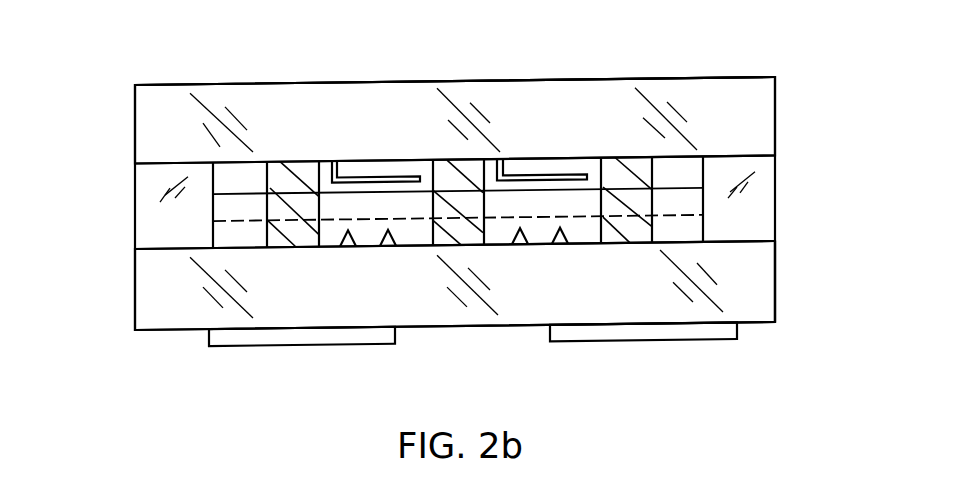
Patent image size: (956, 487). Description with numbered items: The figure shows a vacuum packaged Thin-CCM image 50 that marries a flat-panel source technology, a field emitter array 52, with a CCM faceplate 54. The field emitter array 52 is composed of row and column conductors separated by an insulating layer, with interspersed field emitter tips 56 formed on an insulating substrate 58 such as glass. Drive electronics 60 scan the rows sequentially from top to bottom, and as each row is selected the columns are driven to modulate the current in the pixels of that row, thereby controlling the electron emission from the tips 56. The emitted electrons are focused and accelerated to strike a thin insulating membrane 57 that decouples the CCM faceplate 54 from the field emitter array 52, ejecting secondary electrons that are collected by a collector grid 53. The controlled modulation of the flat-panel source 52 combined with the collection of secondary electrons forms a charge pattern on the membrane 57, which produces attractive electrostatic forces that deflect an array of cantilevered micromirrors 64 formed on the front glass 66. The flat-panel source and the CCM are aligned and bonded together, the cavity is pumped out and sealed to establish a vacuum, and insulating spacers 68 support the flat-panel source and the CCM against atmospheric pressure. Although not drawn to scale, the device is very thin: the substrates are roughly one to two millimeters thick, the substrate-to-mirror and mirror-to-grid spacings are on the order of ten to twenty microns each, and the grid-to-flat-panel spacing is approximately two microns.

The vacuum packaged Thin-CCM image 50 is at (819, 102).
The field emitter array 52 is at (101, 301).
The collector grid 53 is at (225, 222).
The CCM faceplate 54 is at (101, 132).
The field emitter tips 56 is at (524, 233).
The thin insulating membrane 57 is at (673, 189).
The insulating substrate 58 is at (765, 282).
The drive electronics 60 is at (691, 343).
The cantilevered micromirrors 64 is at (525, 172).
The front glass 66 is at (410, 90).
The insulating spacers 68 is at (285, 183).